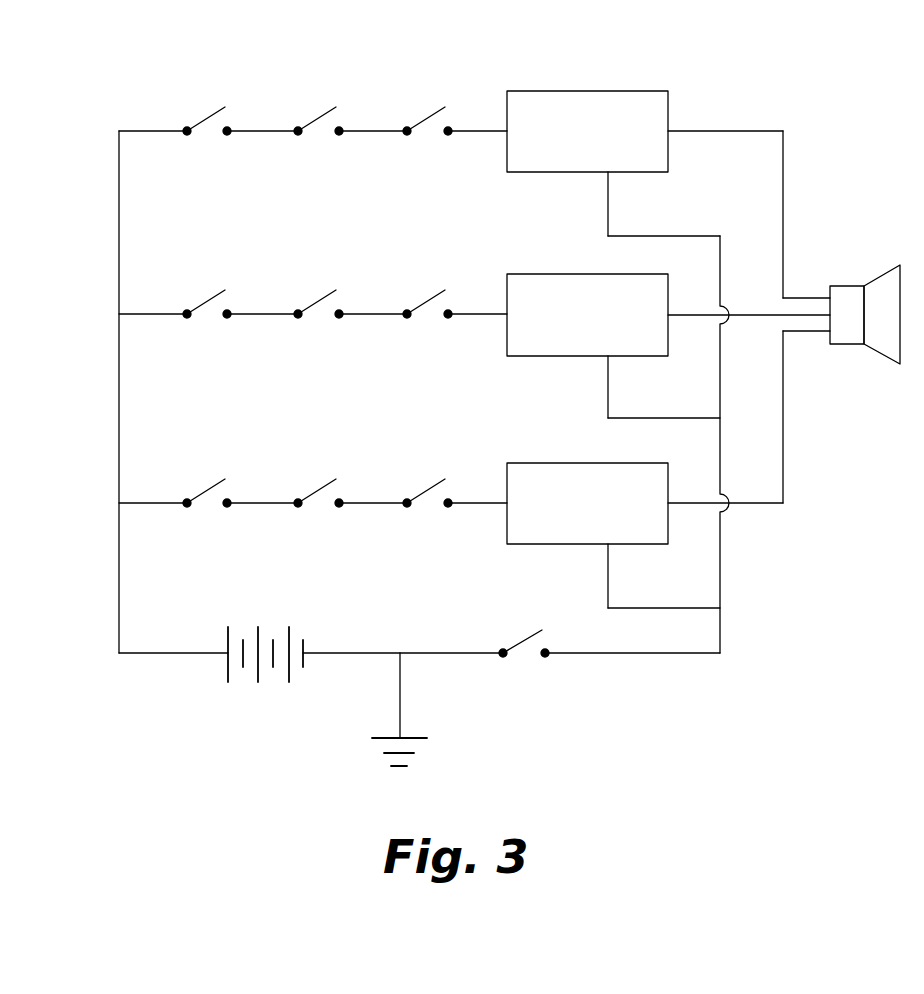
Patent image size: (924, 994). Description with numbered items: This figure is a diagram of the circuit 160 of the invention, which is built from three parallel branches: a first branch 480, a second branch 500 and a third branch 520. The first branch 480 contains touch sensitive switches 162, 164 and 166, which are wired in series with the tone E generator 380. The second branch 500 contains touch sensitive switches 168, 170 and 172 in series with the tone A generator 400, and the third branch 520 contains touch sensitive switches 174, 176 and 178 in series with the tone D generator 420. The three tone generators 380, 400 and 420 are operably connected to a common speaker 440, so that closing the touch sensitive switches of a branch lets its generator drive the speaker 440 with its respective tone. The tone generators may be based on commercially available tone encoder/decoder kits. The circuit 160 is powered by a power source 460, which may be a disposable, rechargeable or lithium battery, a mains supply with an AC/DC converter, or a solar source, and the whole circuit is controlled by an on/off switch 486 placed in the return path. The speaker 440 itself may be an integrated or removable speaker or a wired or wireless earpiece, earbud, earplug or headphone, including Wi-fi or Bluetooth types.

The circuit 160 is at (755, 712).
The touch sensitive switch 162 is at (204, 104).
The touch sensitive switch 164 is at (315, 104).
The touch sensitive switch 166 is at (424, 104).
The touch sensitive switch 168 is at (204, 287).
The touch sensitive switch 170 is at (315, 287).
The touch sensitive switch 172 is at (424, 287).
The touch sensitive switch 174 is at (204, 476).
The touch sensitive switch 176 is at (315, 476).
The touch sensitive switch 178 is at (424, 476).
The tone E generator 380 is at (600, 90).
The tone A generator 400 is at (560, 273).
The tone D generator 420 is at (548, 462).
The speaker 440 is at (882, 265).
The power source 460 is at (244, 685).
The first branch 480 is at (100, 95).
The on/off switch 486 is at (530, 660).
The second branch 500 is at (100, 271).
The third branch 520 is at (100, 460).